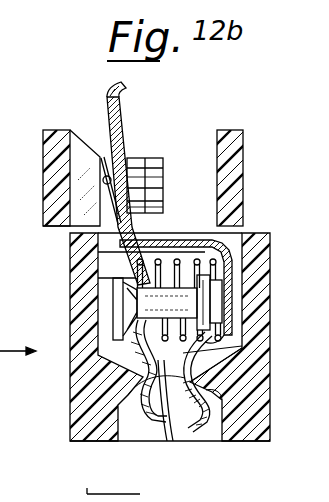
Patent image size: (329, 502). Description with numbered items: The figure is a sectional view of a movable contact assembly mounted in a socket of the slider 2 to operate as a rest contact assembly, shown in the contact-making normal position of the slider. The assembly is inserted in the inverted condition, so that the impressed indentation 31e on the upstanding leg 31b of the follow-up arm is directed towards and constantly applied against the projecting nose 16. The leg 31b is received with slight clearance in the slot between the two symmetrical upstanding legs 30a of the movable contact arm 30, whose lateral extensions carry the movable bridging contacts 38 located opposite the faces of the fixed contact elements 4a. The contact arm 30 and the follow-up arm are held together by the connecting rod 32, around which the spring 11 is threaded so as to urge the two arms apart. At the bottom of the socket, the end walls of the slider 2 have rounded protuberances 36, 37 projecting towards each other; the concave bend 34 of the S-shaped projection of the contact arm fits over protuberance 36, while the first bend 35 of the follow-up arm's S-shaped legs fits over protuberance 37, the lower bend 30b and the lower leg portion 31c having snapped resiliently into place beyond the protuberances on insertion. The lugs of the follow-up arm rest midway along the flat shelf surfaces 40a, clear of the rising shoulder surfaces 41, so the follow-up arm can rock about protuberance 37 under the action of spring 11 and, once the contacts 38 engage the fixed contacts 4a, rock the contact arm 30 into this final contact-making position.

The slider 2 is at (80, 294).
The contact elements 4a is at (147, 180).
The spring 11 is at (271, 352).
The nose 16 is at (105, 182).
The movable contact arm 30 is at (172, 240).
The upstanding legs of contact arm 30a is at (100, 104).
The bend of contact arm 30b is at (208, 427).
The upstanding leg of follow-up arm 31b is at (112, 99).
The spring leg 31c is at (150, 434).
The impressed indentation 31e is at (105, 176).
The connecting rod 32 is at (172, 322).
The bend of contact arm 34 is at (186, 430).
The first bend of follow-up arm 35 is at (170, 441).
The rounded protuberance 36 is at (264, 394).
The rounded protuberance 37 is at (146, 381).
The movable bridging contacts 38 is at (130, 190).
The flat shelf surfaces 40a is at (98, 278).
The rising wall or shoulder surface 41 is at (98, 251).